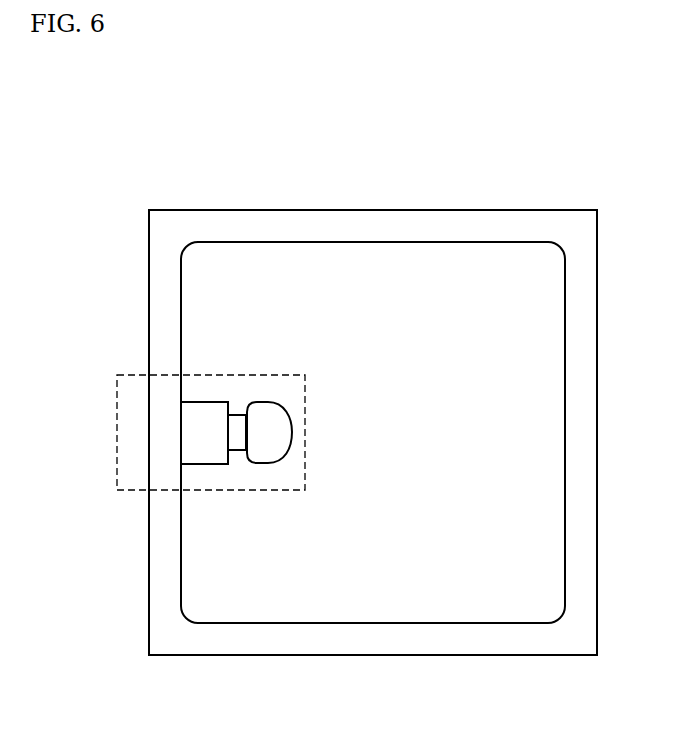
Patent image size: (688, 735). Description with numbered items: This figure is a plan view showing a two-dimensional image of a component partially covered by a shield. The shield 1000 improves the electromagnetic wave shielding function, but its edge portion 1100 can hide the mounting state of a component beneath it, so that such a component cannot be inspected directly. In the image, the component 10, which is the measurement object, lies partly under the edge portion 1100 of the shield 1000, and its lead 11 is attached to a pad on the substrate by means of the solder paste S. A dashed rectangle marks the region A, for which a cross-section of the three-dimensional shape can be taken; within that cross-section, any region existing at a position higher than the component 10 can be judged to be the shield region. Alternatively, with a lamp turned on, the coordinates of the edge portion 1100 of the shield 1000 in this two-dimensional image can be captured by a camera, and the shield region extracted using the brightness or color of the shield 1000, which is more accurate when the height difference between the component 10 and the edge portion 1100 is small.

The shield 1000 is at (333, 190).
The edge portion of the shield 1100 is at (170, 457).
The region A is at (118, 433).
The component 10 is at (220, 390).
The lead 11 is at (237, 447).
The solder paste S is at (282, 433).